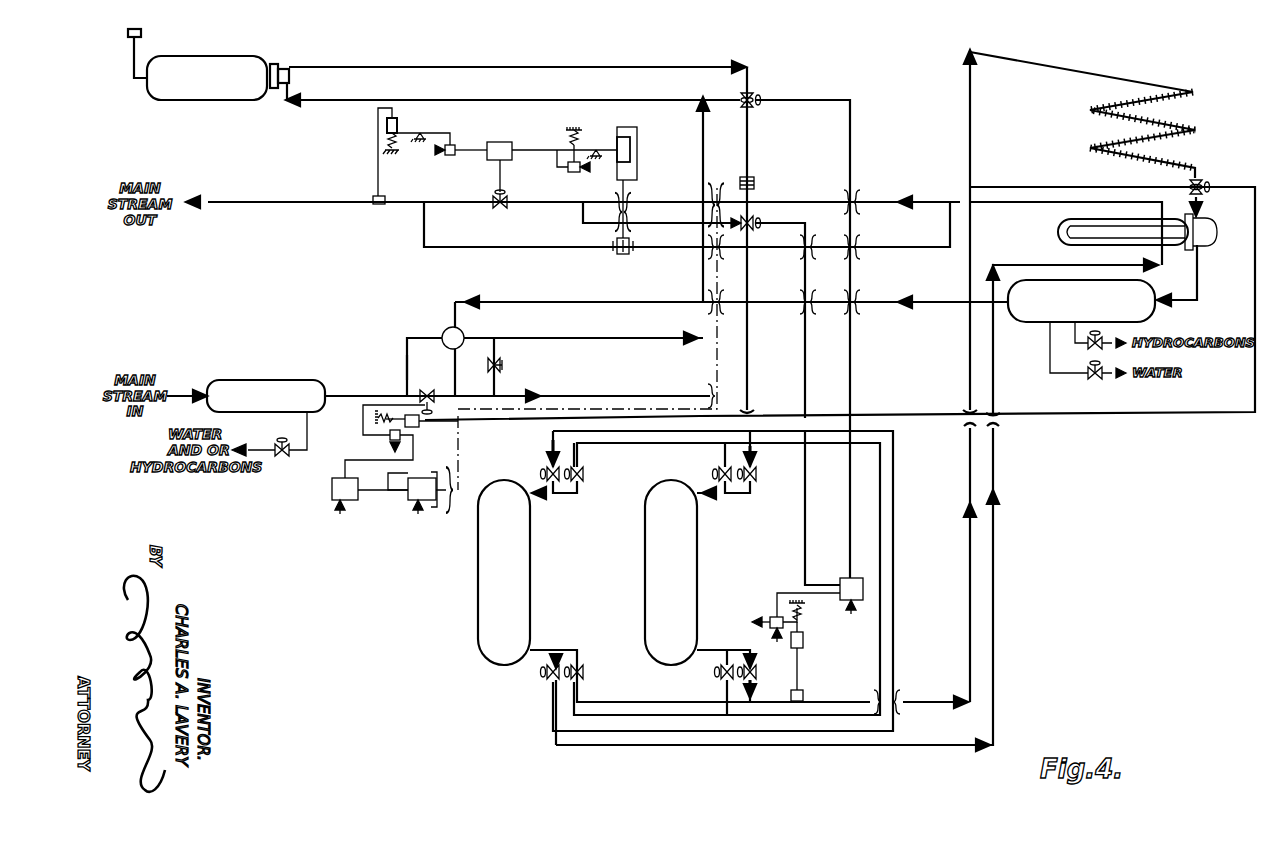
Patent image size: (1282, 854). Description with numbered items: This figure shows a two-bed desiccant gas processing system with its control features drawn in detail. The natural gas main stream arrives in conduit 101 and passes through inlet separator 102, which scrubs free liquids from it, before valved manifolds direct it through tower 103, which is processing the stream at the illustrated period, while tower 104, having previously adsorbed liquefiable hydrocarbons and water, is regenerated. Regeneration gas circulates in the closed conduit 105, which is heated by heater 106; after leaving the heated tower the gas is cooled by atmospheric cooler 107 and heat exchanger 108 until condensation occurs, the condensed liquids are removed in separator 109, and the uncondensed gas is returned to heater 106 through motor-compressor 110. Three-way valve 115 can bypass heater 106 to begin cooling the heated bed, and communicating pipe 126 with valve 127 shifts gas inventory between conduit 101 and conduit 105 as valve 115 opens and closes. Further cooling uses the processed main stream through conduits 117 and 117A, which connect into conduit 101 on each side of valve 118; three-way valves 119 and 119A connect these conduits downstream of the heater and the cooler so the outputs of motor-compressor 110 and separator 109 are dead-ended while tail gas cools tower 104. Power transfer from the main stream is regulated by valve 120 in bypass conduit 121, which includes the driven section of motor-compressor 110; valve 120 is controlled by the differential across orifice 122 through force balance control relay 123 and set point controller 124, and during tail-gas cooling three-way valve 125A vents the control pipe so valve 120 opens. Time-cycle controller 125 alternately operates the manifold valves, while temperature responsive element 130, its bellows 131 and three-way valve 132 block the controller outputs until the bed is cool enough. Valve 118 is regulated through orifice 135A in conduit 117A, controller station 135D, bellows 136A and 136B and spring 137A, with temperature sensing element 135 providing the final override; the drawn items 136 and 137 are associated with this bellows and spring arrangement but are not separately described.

The conduit 101 is at (188, 378).
The inlet separator 102 is at (233, 380).
The tower 103 is at (532, 570).
The tower 104 is at (700, 556).
The conduit 105 is at (700, 124).
The heater 106 is at (226, 102).
The atmospheric cooler 107 is at (1184, 122).
The heat exchanger 108 is at (1210, 250).
The separator 109 is at (1156, 312).
The motor-compressor 110 is at (444, 330).
The three-way valve 115 is at (759, 96).
The conduit 117 is at (471, 249).
The conduit 117A is at (583, 226).
The valve 118 is at (504, 199).
The three-way valve 119 is at (1200, 178).
The three-way valve 119A is at (760, 222).
The valve 120 is at (430, 393).
The bypass conduit 121 is at (405, 359).
The orifice 122 is at (755, 184).
The force balance control relay 123 is at (410, 502).
The set point controller 124 is at (331, 496).
The time-cycle controller 125 is at (841, 578).
The three-way valve 125A is at (389, 435).
The communicating pipe 126 is at (498, 348).
The valve 127 is at (501, 369).
The temperature responsive element 130 is at (804, 697).
The bellows 131 is at (803, 646).
The three-way valve 132 is at (771, 616).
The temperature sensing element 135 is at (376, 197).
The orifice 135A is at (618, 256).
The controller station 135D is at (525, 118).
The relay 136 is at (397, 126).
The bellows 136A is at (637, 151).
The bellows 136B is at (637, 162).
The relay linkage 137 is at (385, 149).
The spring 137A is at (597, 120).